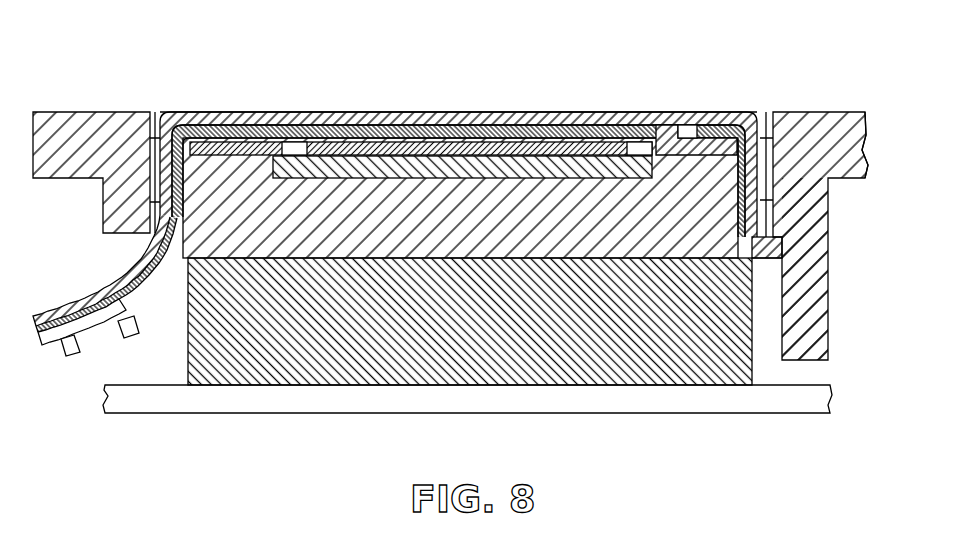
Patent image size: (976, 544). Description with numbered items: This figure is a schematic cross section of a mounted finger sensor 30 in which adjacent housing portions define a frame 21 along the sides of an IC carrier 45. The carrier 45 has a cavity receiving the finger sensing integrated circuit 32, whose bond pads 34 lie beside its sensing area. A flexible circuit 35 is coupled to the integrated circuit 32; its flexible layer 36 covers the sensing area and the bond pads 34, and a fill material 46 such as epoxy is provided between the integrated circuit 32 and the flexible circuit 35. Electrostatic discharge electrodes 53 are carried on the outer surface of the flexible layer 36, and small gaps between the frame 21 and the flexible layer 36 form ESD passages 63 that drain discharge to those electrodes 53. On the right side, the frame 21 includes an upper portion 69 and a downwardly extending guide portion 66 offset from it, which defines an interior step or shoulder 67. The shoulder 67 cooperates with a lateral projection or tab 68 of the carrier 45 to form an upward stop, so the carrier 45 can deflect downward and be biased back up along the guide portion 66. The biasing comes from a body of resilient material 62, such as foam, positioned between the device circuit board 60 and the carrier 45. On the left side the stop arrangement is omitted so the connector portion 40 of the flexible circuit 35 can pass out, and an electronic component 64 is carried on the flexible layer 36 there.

The frame 21 is at (75, 133).
The finger sensor 30 is at (534, 65).
The finger sensing integrated circuit 32 is at (418, 165).
The bond pads 34 is at (305, 143).
The flexible circuit 35 is at (517, 107).
The flexible layer 36 is at (238, 112).
The connector portion 40 is at (62, 303).
The IC carrier 45 is at (240, 237).
The fill material 46 is at (692, 128).
The electrostatic discharge electrodes 53 is at (155, 145).
The device circuit board 60 is at (690, 405).
The body of resilient material 62 is at (320, 352).
The ESD passages 63 is at (160, 112).
The electronic component 64 is at (97, 348).
The guide portion 66 is at (813, 317).
The step or shoulder 67 is at (785, 240).
The lateral projection or tab 68 is at (765, 260).
The upper portion 69 is at (845, 155).